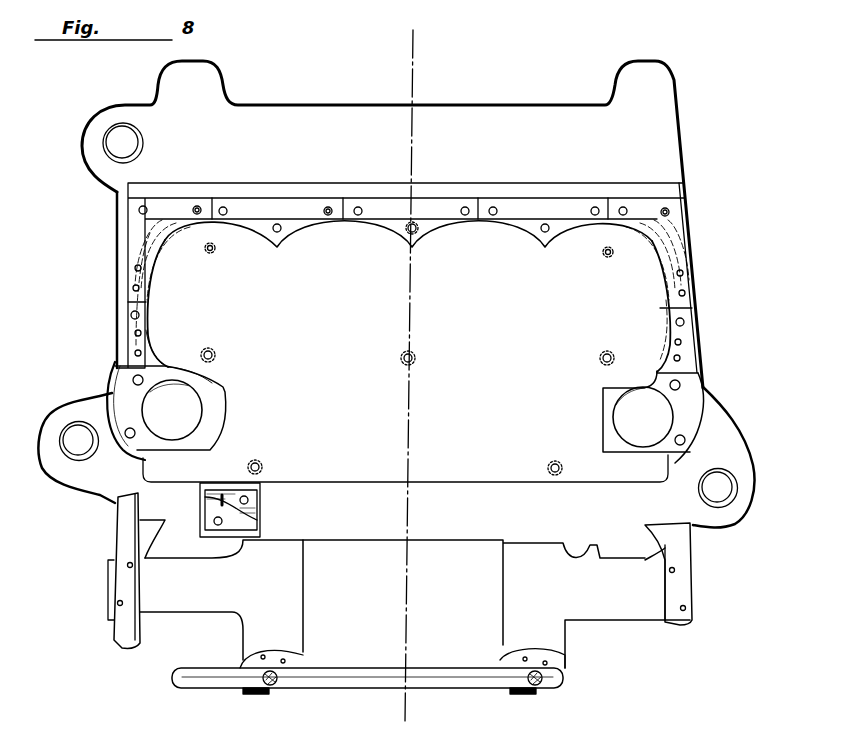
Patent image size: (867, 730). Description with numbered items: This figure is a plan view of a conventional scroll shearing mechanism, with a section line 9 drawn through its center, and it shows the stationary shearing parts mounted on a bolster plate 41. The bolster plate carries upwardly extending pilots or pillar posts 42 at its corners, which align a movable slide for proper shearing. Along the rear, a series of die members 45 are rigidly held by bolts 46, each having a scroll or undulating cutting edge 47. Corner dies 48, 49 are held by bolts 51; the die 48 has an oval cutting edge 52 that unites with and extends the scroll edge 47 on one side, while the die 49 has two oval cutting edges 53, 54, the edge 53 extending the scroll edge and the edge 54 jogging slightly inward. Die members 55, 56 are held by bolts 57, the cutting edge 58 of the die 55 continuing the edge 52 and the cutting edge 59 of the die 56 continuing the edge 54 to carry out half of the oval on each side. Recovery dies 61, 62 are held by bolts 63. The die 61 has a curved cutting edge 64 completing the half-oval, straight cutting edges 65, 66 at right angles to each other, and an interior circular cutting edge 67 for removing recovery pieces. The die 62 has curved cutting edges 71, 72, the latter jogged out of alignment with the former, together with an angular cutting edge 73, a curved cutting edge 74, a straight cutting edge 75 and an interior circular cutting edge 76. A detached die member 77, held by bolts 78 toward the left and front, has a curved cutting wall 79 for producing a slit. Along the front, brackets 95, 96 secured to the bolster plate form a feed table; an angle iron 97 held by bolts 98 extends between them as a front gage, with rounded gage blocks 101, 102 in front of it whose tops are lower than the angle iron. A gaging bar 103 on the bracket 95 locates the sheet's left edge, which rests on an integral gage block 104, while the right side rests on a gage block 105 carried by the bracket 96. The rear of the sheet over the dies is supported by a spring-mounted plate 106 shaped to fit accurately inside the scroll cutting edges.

The section line 9- 9 is at (452, 53).
The bolster plate 41 is at (513, 122).
The pilots or pillar posts 42 is at (116, 137).
The die members 45 is at (268, 206).
The bolts 46 is at (328, 206).
The scroll or undulating cutting edge 47 is at (316, 238).
The corner die 48 is at (683, 248).
The corner die 49 is at (135, 236).
The bolts 51 is at (201, 205).
The cutting edge 52 is at (659, 263).
The cutting edge 53 is at (187, 236).
The cutting edge 54 is at (157, 298).
The die member 55 is at (689, 348).
The die member 56 is at (131, 340).
The bolts 57 is at (131, 314).
The cutting edge 58 is at (665, 343).
The cutting edge 59 is at (157, 352).
The recovery die 61 is at (659, 413).
The recovery die 62 is at (405, 419).
The bolts 63 is at (128, 438).
The curved cutting edge 64 is at (634, 387).
The straight cutting edge 65 is at (603, 423).
The straight cutting edge 66 is at (640, 450).
The circular cutting edge 67 is at (613, 406).
The curved cutting edge 71 is at (167, 366).
The curved cutting edge 72 is at (196, 387).
The angular cutting edge 73 is at (226, 389).
The curved cutting edge 74 is at (222, 412).
The straight cutting edge 75 is at (190, 450).
The circular cutting edge 76 is at (201, 425).
The detached die member 77 is at (249, 527).
The bolts 78 is at (249, 500).
The curved cutting edge or wall 79 is at (220, 500).
The bracket 95 is at (190, 607).
The bracket 96 is at (633, 613).
The angle iron 97 is at (480, 684).
The bolts 98 is at (271, 686).
The rounded gage block 101 is at (273, 650).
The rounded gage block 102 is at (540, 653).
The gaging bar 103 is at (122, 540).
The gage block 104 is at (154, 535).
The gage block 105 is at (683, 548).
The plate 106 is at (502, 485).